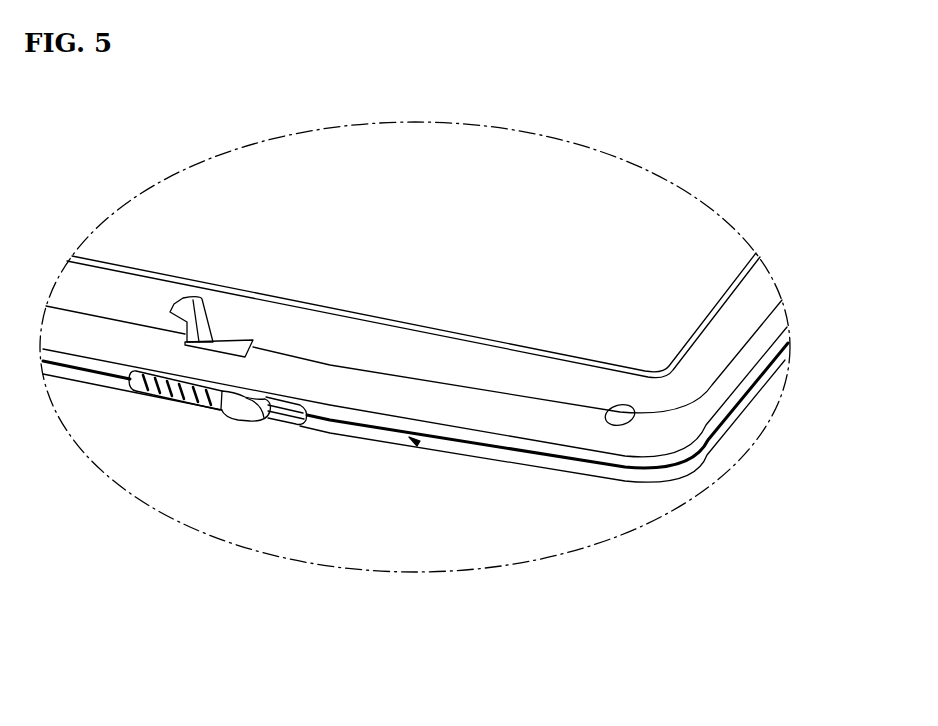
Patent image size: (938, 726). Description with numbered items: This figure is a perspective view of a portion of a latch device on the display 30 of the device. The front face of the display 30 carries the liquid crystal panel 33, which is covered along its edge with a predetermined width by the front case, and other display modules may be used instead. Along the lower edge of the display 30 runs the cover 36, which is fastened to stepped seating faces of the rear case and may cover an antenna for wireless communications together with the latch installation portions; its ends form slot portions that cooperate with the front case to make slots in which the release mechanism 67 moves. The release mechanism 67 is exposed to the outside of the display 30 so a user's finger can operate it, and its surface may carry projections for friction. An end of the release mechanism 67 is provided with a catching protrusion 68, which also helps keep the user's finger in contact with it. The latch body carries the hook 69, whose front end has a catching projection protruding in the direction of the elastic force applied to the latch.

The display 30 is at (713, 348).
The liquid crystal panel 33 is at (476, 212).
The cover 36 is at (352, 442).
The release mechanism 67 is at (170, 400).
The catching protrusion 68 is at (243, 412).
The hook 69 is at (190, 302).